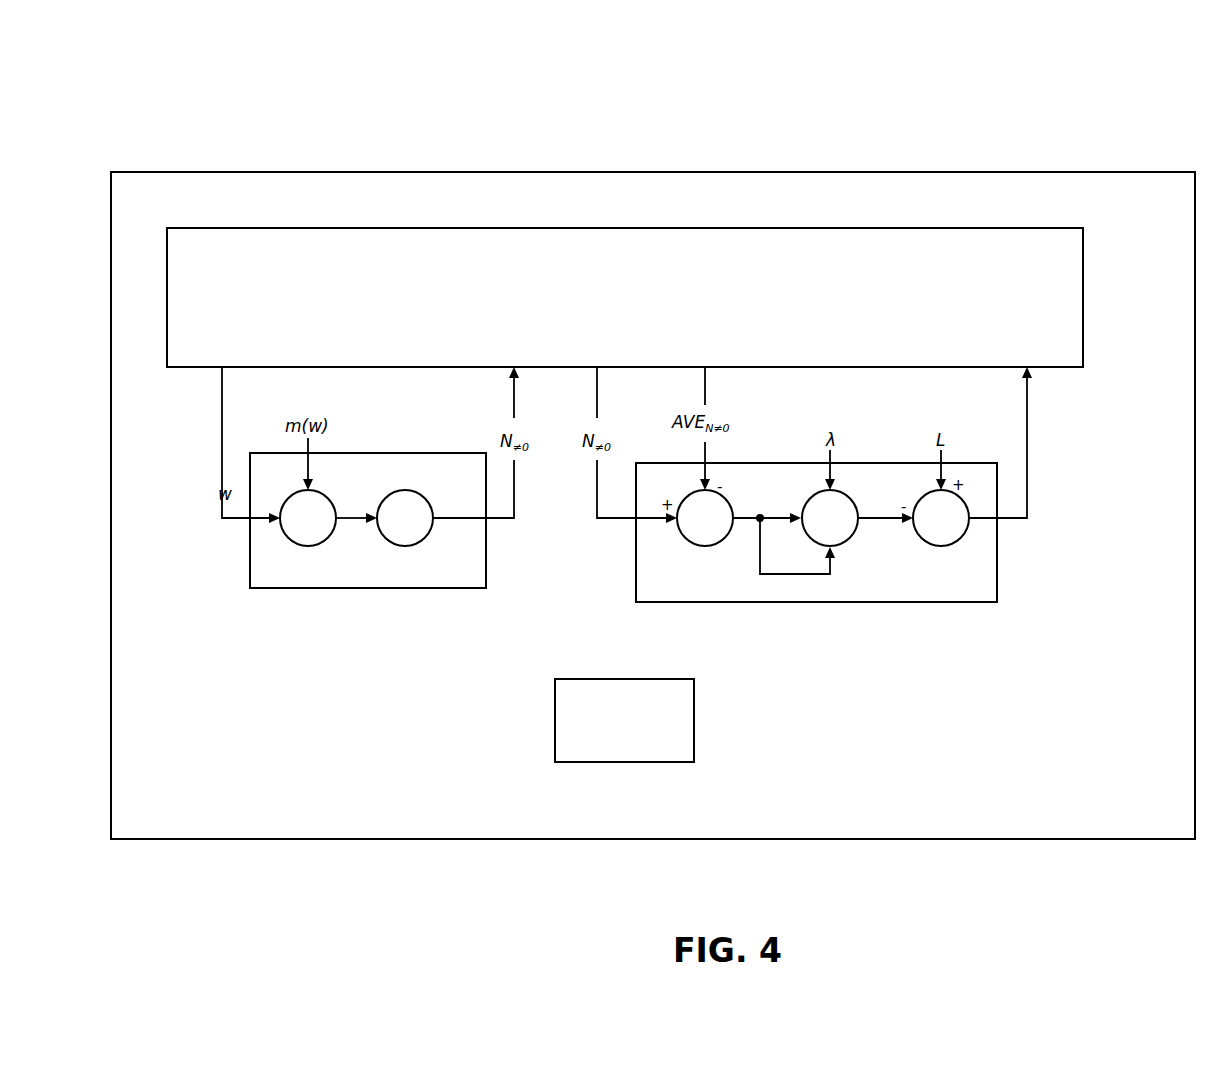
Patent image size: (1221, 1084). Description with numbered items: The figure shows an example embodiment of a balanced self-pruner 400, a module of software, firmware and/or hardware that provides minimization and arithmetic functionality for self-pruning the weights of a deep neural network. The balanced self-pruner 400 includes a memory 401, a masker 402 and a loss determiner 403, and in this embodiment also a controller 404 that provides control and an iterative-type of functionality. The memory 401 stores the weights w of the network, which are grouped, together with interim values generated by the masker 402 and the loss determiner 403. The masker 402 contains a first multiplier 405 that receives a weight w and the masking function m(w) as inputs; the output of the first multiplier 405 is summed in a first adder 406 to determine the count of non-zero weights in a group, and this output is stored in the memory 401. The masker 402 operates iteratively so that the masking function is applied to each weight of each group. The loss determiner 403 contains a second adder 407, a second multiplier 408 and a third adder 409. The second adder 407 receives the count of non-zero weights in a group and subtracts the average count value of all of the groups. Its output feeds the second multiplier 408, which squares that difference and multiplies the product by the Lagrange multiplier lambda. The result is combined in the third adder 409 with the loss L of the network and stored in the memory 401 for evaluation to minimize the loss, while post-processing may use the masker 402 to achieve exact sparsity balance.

The balanced self-pruner 400 is at (321, 113).
The memory 401 is at (1083, 352).
The masker 402 is at (486, 572).
The loss determiner 403 is at (997, 582).
The controller 404 is at (694, 742).
The first multiplier 405 is at (328, 540).
The first adder 406 is at (422, 540).
The second adder 407 is at (693, 545).
The second multiplier 408 is at (848, 545).
The third adder 409 is at (950, 545).